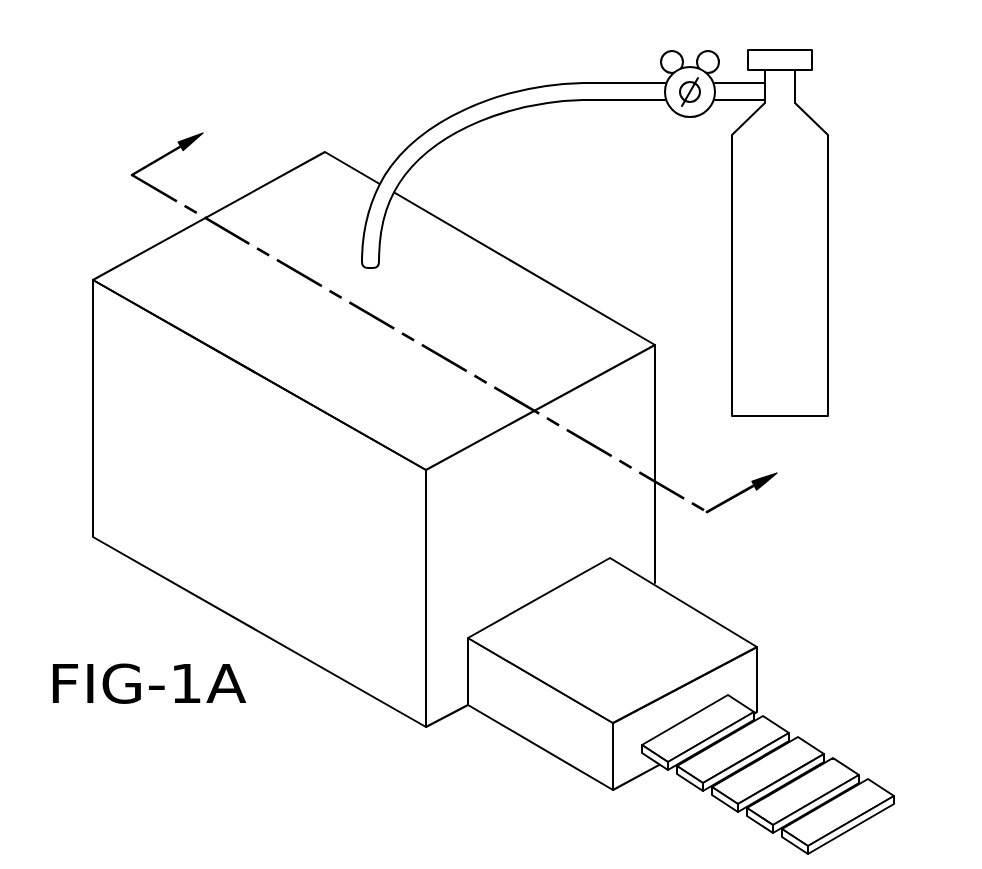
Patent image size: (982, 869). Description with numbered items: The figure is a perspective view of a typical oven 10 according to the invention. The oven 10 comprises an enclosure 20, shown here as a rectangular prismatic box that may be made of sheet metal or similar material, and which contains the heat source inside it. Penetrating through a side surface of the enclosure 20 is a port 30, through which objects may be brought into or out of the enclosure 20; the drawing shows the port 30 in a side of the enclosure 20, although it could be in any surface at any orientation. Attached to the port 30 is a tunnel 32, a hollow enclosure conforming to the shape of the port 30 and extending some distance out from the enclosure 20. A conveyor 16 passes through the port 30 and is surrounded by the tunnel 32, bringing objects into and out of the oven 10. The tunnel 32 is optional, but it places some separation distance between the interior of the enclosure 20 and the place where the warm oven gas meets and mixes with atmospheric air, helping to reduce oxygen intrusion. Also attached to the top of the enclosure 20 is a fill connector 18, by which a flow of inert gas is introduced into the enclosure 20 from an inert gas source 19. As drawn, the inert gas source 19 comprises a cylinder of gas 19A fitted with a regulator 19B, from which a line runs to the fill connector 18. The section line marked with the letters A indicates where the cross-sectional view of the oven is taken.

The oven 10 is at (458, 431).
The conveyor 16 is at (768, 774).
The fill connector 18 is at (382, 260).
The inert gas source 19 is at (676, 212).
The cylinder of gas 19A is at (732, 205).
The regulator 19B is at (662, 55).
The enclosure 20 is at (93, 368).
The port 30 is at (638, 674).
The tunnel 32 is at (690, 633).